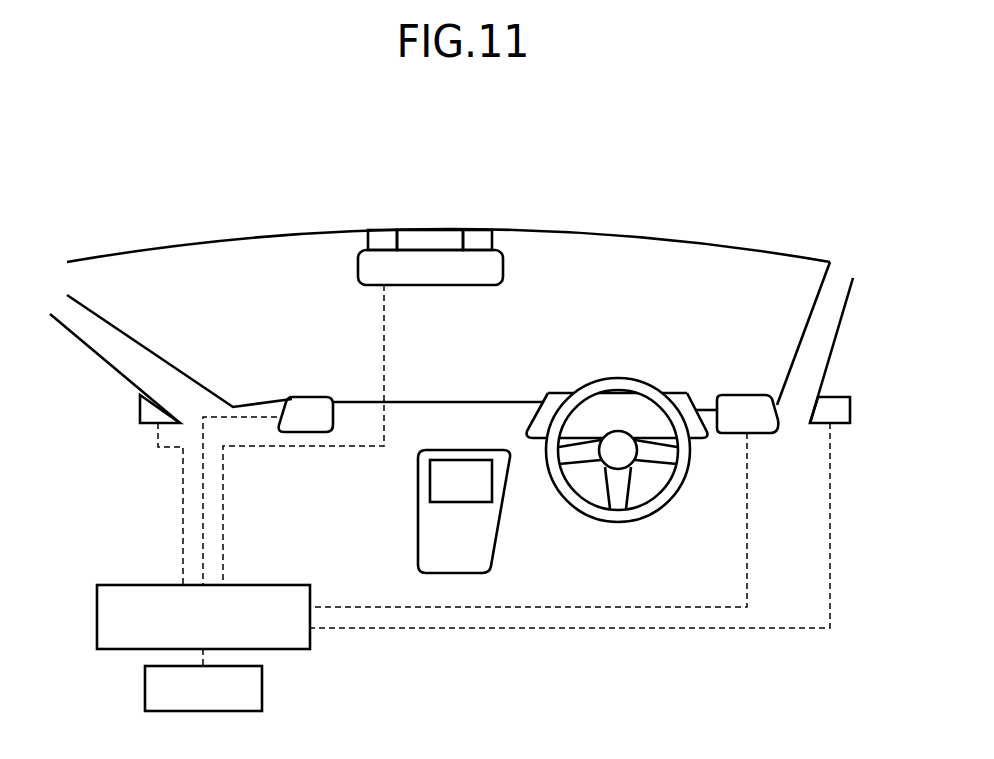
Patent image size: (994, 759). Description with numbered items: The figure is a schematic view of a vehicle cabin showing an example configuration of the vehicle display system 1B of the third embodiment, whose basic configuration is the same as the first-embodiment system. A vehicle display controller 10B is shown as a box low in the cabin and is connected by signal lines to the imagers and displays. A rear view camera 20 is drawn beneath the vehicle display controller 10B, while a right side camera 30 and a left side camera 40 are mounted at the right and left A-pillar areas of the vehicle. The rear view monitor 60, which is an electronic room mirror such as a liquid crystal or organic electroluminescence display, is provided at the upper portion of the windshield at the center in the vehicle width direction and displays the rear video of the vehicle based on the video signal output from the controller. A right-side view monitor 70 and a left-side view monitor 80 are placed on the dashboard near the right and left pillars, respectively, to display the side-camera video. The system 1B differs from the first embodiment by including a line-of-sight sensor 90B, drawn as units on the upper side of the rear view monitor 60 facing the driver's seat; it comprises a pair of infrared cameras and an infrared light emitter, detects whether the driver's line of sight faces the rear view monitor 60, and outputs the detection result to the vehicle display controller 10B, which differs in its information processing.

The vehicle display system 1B is at (801, 167).
The vehicle display controller 10B is at (115, 566).
The rear view camera 20 is at (262, 685).
The right side camera 30 is at (850, 410).
The left side camera 40 is at (138, 412).
The rear view monitor 60 is at (430, 265).
The right-side view monitor 70 is at (748, 413).
The left-side view monitor 80 is at (309, 415).
The line-of-sight sensor 90B is at (384, 238).